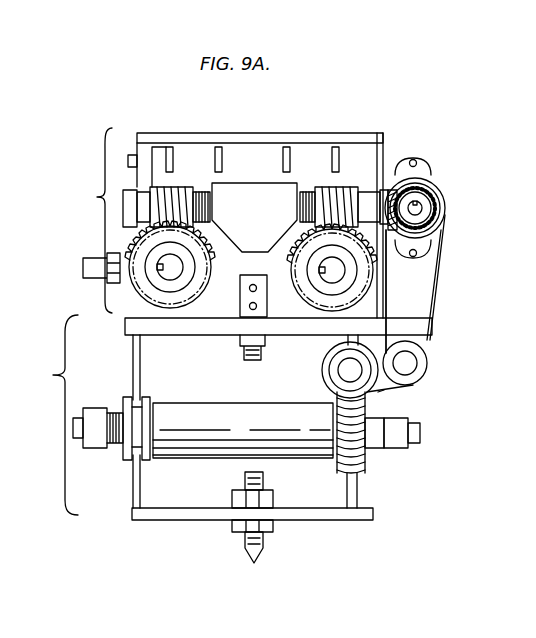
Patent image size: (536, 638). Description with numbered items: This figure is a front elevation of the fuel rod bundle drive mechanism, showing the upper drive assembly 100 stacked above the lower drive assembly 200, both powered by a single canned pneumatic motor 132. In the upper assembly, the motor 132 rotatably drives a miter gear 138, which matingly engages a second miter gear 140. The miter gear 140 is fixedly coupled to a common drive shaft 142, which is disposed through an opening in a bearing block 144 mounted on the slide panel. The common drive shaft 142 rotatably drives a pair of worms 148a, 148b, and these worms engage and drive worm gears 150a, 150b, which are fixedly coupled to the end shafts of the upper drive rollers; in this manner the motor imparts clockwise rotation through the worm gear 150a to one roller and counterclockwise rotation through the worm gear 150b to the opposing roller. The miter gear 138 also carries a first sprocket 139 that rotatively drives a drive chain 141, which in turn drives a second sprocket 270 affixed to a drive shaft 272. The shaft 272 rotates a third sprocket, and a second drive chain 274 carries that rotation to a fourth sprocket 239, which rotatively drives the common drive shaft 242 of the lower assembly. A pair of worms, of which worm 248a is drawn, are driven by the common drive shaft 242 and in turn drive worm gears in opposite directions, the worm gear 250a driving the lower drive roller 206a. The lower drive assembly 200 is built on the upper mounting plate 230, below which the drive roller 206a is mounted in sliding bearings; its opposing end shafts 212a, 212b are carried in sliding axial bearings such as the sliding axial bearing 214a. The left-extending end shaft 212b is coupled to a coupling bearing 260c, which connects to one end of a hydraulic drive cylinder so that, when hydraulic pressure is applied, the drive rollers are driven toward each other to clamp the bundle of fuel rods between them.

The upper drive assembly 100 is at (86, 220).
The lower drive assembly 200 is at (46, 415).
The canned pneumatic motor 132 is at (435, 168).
The miter gear 138 is at (445, 233).
The first sprocket 139 is at (440, 207).
The miter gear 140 is at (385, 187).
The drive chain 141 is at (435, 280).
The common drive shaft 142 is at (118, 175).
The bearing block 144 is at (265, 190).
The worm 148a is at (190, 190).
The worm 148b is at (320, 188).
The worm gear 150a is at (190, 297).
The worm gear 150b is at (302, 263).
The drive roller 206a is at (168, 450).
The end shaft 212a is at (420, 435).
The end shaft 212b is at (78, 447).
The sliding axial bearing 214a is at (145, 413).
The upper mounting plate 230 is at (420, 328).
The fourth sprocket 239 is at (322, 367).
The common drive shaft 242 is at (338, 362).
The worm 248a is at (335, 377).
The worm gear 250a is at (368, 465).
The coupling bearing 260c is at (98, 420).
The second sprocket 270 is at (415, 378).
The drive shaft 272 is at (407, 363).
The second drive chain 274 is at (378, 392).